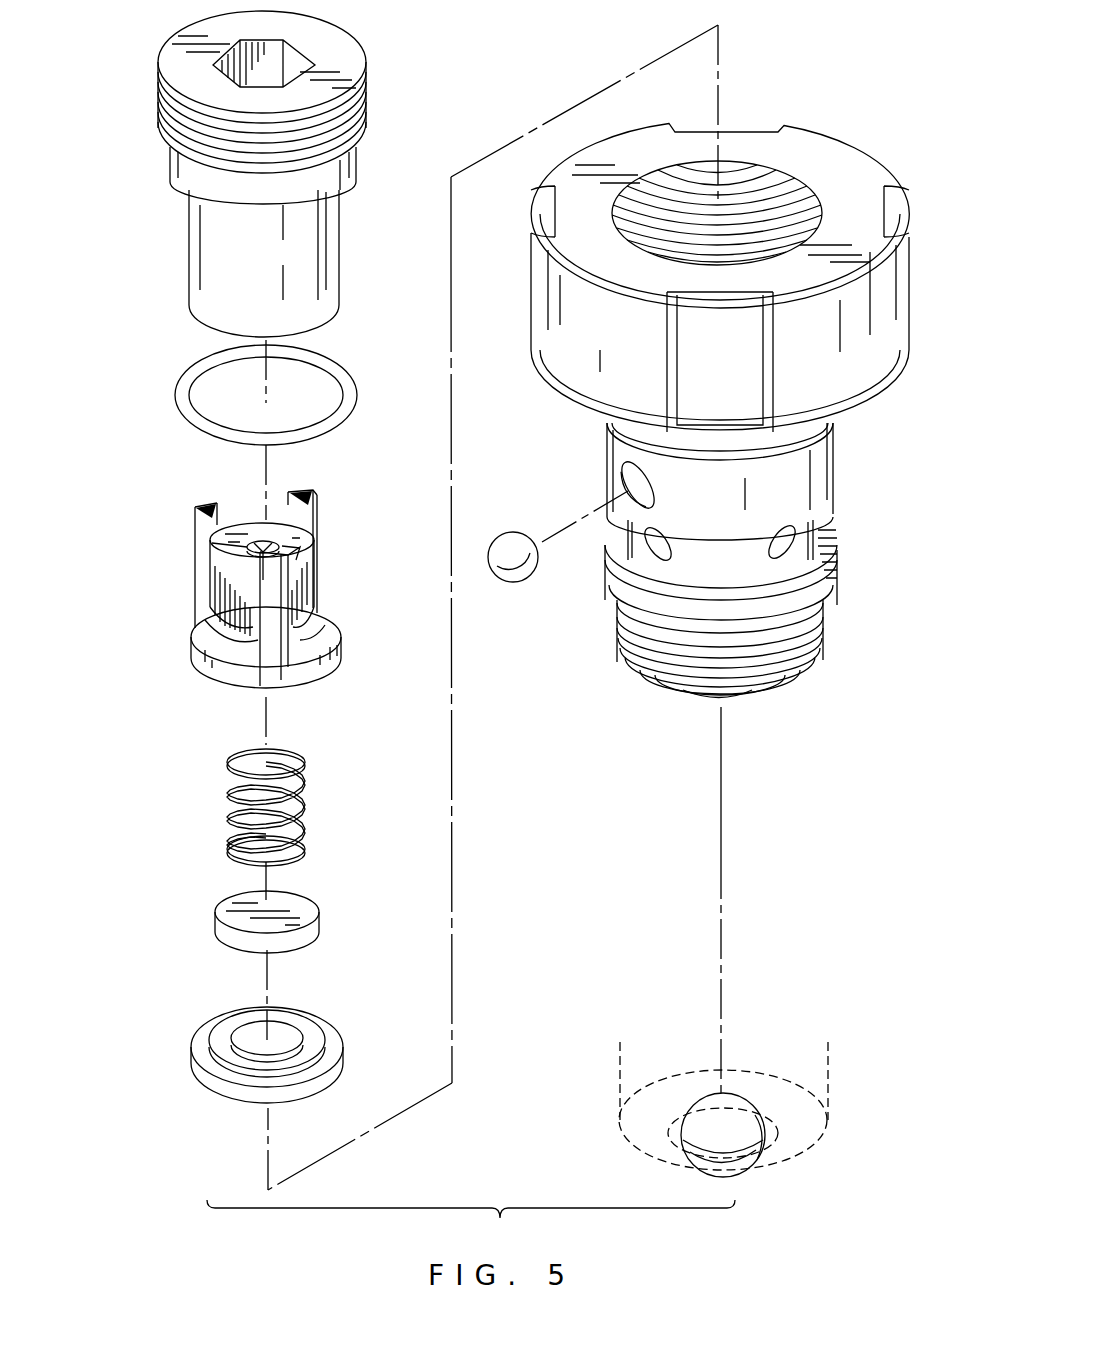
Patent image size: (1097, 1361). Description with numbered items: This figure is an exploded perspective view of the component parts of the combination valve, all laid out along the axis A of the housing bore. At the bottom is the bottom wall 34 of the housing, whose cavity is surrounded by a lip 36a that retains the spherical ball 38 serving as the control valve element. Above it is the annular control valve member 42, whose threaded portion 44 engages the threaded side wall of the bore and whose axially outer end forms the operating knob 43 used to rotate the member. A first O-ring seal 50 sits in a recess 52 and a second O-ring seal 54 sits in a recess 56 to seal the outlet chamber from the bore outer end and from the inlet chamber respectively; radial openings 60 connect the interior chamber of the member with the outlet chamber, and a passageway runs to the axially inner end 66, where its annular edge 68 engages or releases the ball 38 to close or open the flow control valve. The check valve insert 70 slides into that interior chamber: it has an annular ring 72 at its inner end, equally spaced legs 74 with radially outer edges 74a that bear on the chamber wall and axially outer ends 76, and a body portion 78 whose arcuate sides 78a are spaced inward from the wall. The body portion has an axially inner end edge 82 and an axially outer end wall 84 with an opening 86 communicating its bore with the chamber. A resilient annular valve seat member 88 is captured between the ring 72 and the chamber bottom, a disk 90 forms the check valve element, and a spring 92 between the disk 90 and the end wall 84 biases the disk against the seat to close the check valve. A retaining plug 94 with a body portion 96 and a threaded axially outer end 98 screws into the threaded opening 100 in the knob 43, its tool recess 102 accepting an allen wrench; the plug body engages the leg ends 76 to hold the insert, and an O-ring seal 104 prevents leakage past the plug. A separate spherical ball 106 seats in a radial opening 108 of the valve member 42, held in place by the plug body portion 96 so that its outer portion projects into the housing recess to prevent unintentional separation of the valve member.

The bottom wall 34 is at (808, 1133).
The lip 36a is at (787, 1161).
The spherical ball 38 is at (739, 1106).
The control valve member 42 is at (606, 450).
The operating knob 43 is at (872, 158).
The threaded portion 44 is at (767, 665).
The first O-ring seal 50 is at (743, 450).
The recess 52 is at (787, 450).
The second O-ring seal 54 is at (835, 585).
The recess 56 is at (767, 620).
The radial openings 60 is at (653, 548).
The axially inner end 66 is at (732, 698).
The annular edge 68 is at (707, 700).
The check valve insert 70 is at (201, 668).
The annular ring 72 is at (310, 675).
The legs 74 is at (318, 517).
The radially outer edges 74a is at (323, 660).
The axially outer ends 76 is at (195, 505).
The body portion 78 is at (206, 589).
The arcuate sides 78a is at (220, 575).
The axially inner end edge 82 is at (252, 627).
The axially outer end wall 84 is at (303, 540).
The opening 86 is at (260, 540).
The valve seat member 88 is at (210, 1080).
The disk 90 is at (218, 935).
The spring 92 is at (228, 822).
The retaining plug 94 is at (366, 77).
The body portion 96 is at (207, 233).
The axially outer end 98 is at (347, 52).
The threaded opening 100 is at (782, 186).
The tool recess 102 is at (215, 67).
The O-ring seal 104 is at (192, 367).
The spherical ball 106 is at (512, 572).
The opening 108 is at (627, 478).
The axis A is at (725, 858).